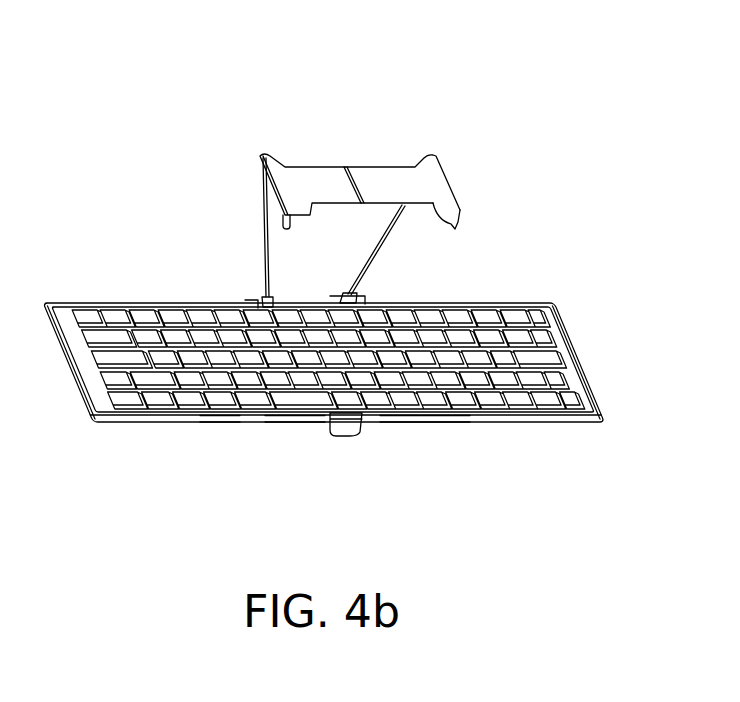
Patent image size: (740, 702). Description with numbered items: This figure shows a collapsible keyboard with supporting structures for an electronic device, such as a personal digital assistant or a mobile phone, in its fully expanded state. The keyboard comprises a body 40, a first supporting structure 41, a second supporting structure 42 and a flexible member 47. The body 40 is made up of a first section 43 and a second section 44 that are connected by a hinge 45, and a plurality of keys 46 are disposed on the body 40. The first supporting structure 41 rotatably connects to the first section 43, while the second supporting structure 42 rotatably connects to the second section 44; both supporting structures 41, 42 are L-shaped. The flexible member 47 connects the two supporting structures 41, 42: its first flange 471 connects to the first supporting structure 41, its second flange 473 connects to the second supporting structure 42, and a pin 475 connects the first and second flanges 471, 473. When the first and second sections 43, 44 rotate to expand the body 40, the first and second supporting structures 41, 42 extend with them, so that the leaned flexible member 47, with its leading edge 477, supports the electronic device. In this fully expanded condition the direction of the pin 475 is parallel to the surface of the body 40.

The body 40 is at (192, 507).
The first supporting structure 41 is at (265, 233).
The second supporting structure 42 is at (367, 272).
The first section 43 is at (287, 425).
The second section 44 is at (420, 425).
The hinge 45 is at (345, 430).
The keys 46 is at (217, 423).
The flexible member 47 is at (268, 83).
The first flange 471 is at (307, 167).
The second flange 473 is at (393, 167).
The pin 475 is at (345, 167).
The leading edge 477 is at (456, 229).